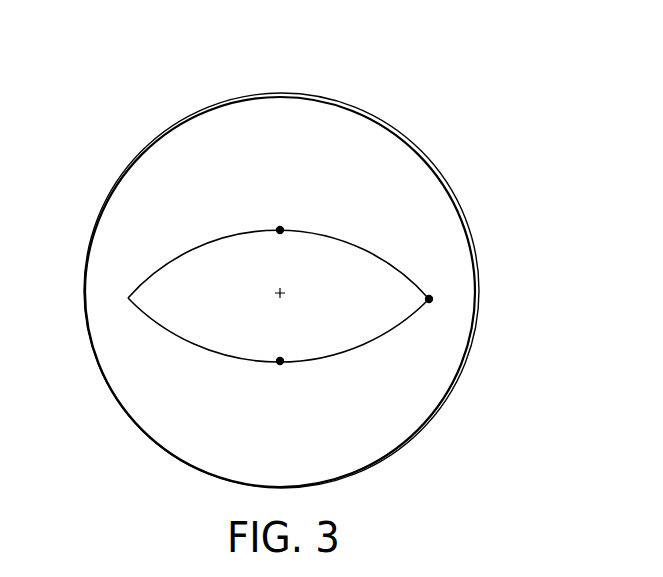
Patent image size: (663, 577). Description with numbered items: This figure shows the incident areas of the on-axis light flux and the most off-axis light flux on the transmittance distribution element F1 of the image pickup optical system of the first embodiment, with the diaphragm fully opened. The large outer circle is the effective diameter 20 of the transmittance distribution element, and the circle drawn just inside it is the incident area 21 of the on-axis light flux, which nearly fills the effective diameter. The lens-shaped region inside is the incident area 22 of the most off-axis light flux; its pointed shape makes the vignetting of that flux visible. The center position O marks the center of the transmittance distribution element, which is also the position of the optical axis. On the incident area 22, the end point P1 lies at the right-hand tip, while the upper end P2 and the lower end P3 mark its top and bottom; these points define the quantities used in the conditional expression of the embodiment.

The effective diameter of the transmittance distribution element 20 is at (320, 97).
The incident area of the on-axis light flux 21 is at (142, 153).
The incident area of the most off-axis light flux 22 is at (163, 328).
The end point of the incident area P1 is at (442, 282).
The upper end of the incident area P2 is at (278, 214).
The lower end of the incident area P3 is at (278, 381).
The center position of the transmittance distribution element O is at (271, 306).